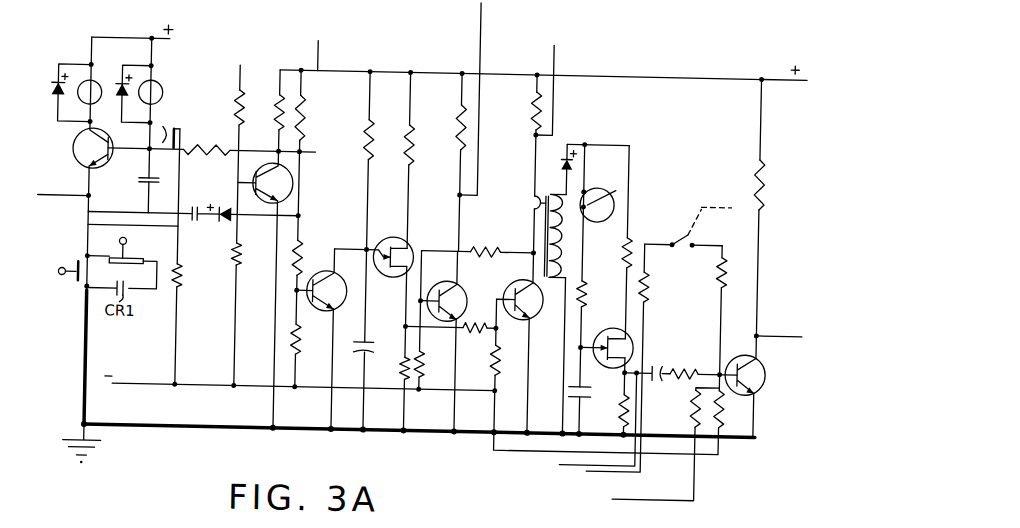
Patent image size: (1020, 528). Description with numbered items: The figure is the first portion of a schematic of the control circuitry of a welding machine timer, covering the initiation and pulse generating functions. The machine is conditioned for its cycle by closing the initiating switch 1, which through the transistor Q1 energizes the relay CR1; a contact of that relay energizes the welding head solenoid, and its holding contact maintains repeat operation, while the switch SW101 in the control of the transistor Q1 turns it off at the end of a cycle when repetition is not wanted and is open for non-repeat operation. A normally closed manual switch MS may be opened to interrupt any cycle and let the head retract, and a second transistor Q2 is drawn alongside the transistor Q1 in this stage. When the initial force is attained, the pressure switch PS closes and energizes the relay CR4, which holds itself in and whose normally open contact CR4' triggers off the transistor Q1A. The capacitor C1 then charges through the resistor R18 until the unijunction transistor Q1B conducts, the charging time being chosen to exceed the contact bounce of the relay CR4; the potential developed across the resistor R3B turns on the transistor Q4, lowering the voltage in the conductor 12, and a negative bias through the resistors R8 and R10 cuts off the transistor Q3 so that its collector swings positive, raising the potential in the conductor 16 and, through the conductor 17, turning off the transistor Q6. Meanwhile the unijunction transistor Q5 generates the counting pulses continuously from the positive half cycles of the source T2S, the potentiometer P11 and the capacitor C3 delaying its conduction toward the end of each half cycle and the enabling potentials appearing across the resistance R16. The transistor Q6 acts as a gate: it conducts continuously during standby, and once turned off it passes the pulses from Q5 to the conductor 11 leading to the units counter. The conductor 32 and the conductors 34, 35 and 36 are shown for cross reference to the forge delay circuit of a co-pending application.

The initiating switch 1 is at (65, 265).
The conductor 11 is at (769, 322).
The conductor 12 is at (546, 38).
The conductor 16 is at (473, 29).
The conductor 17 is at (657, 488).
The line 32 is at (232, 62).
The conductor 34 is at (560, 455).
The conductor 35 is at (310, 39).
The conductor 36 is at (44, 196).
The transistor Q1 is at (71, 150).
The transistor Q2 is at (245, 177).
The transistor Q1A is at (321, 279).
The unijunction transistor Q1B is at (374, 252).
The transistor Q3 is at (444, 286).
The transistor Q4 is at (515, 277).
The unijunction transistor Q5 is at (607, 320).
The transistor Q6 is at (765, 358).
The relay CR1 is at (76, 93).
The relay CR4 is at (132, 130).
The normally open contact CR4' is at (193, 205).
The pressure switch PS is at (171, 125).
The manual switch MS is at (125, 252).
The resistor R18 is at (362, 135).
The resistor R8 is at (492, 244).
The resistor R3B is at (388, 368).
The resistor R10 is at (434, 365).
The resistance R16 is at (619, 411).
The capacitor C1 is at (358, 341).
The capacitor C3 is at (583, 364).
The source T2S is at (530, 186).
The potentiometer P11 is at (596, 178).
The switch SW101 is at (687, 238).